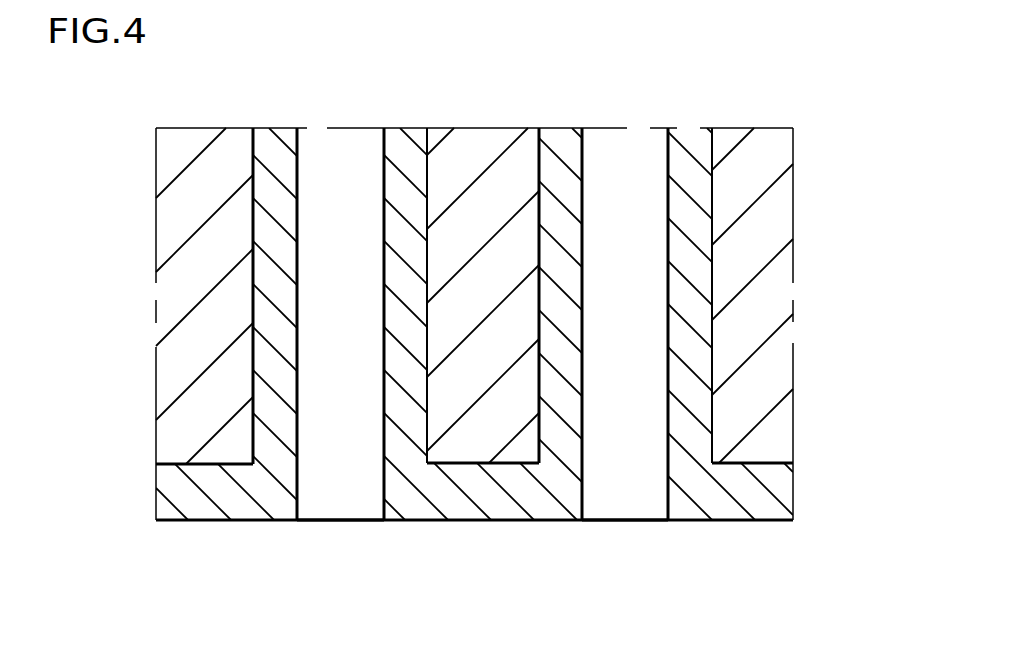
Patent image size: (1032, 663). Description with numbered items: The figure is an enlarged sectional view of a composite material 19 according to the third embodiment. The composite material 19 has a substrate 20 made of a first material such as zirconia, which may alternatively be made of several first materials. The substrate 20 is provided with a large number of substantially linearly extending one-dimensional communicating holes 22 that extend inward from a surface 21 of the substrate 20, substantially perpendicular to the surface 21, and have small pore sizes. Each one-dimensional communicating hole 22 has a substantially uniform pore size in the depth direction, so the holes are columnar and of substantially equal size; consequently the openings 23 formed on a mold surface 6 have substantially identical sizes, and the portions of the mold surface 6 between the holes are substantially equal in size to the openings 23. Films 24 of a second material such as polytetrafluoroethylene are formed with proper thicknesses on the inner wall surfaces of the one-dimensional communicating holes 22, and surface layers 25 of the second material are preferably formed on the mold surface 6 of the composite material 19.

The composite material 19 is at (835, 102).
The substrate 20 is at (198, 167).
The films 24 is at (277, 157).
The one-dimensional communicating holes 22 is at (340, 157).
The openings 23 is at (298, 527).
The surface layers 25 is at (458, 495).
The surface 21 is at (513, 465).
The mold surface 6 is at (735, 520).